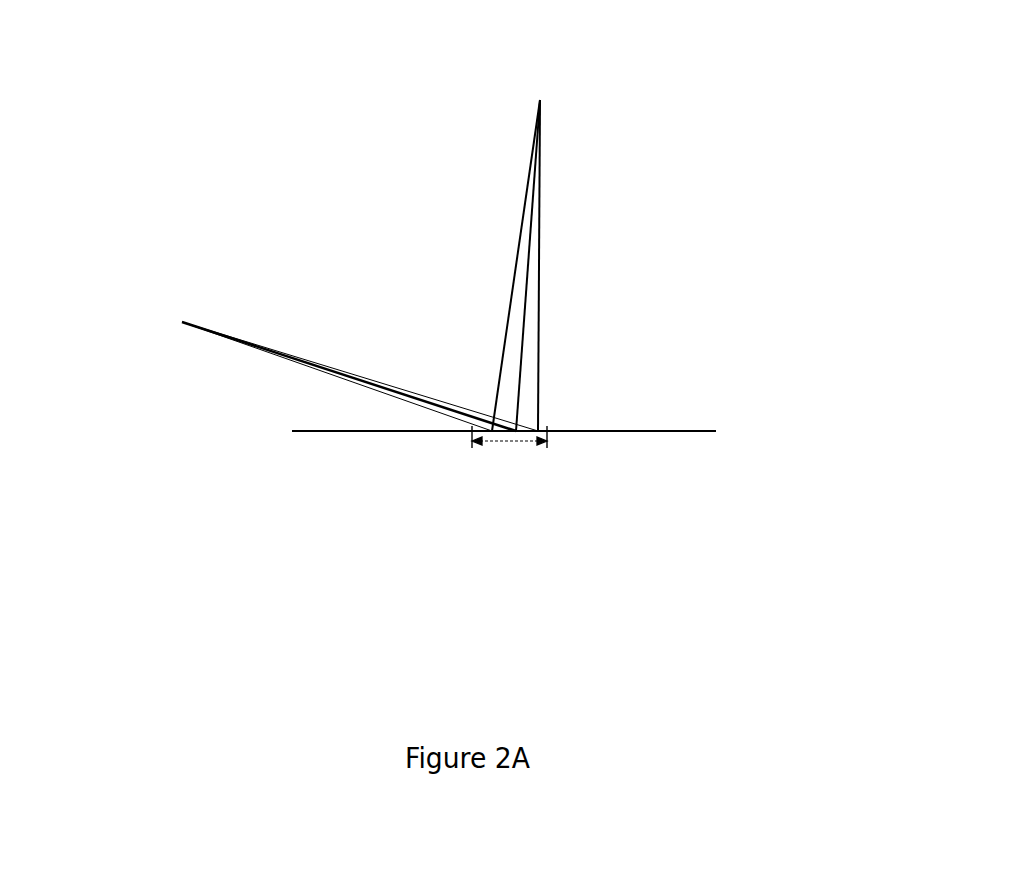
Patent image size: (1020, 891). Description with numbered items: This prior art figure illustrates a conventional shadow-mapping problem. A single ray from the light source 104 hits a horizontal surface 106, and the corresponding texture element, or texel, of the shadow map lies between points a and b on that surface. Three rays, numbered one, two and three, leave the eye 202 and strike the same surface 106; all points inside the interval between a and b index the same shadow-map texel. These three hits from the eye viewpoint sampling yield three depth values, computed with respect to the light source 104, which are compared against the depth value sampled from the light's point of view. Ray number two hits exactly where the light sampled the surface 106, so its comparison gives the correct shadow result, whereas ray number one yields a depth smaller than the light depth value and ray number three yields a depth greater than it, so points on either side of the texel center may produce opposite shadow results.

The light source 104 is at (148, 284).
The surface 106 is at (718, 432).
The eye 202 is at (563, 78).